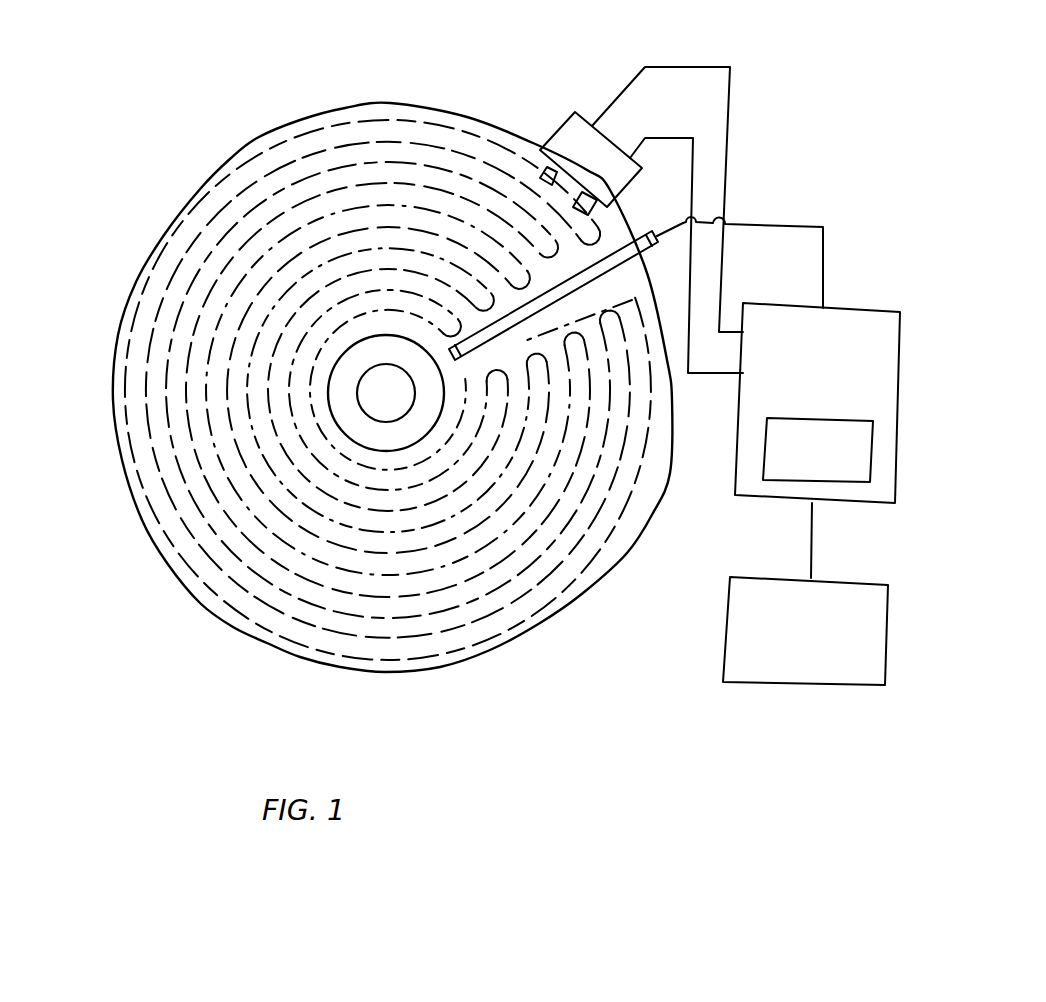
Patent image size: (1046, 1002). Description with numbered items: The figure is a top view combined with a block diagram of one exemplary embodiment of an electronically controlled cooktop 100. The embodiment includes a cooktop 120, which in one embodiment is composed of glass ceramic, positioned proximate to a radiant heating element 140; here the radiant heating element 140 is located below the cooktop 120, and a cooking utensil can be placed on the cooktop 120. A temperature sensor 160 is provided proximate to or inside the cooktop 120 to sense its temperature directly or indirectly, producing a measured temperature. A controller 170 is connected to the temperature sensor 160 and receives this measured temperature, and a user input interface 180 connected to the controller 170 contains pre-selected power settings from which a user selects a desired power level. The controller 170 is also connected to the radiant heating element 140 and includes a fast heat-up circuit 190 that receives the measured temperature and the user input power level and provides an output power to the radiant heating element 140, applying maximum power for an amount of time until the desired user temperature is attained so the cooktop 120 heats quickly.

The electronically controlled cooktop 100 is at (95, 38).
The cooktop 120 is at (247, 143).
The radiant heating element 140 is at (390, 137).
The temperature sensor 160 is at (495, 337).
The controller 170 is at (872, 307).
The user input interface 180 is at (793, 680).
The fast heat-up circuit 190 is at (767, 455).